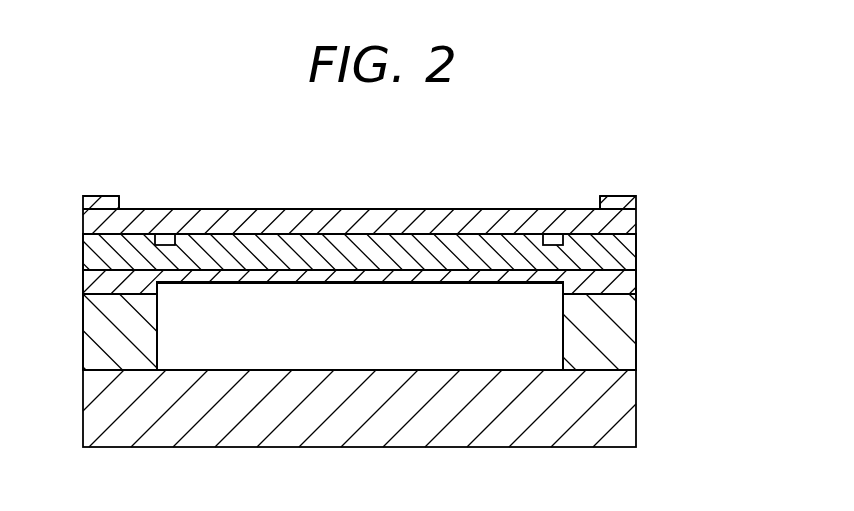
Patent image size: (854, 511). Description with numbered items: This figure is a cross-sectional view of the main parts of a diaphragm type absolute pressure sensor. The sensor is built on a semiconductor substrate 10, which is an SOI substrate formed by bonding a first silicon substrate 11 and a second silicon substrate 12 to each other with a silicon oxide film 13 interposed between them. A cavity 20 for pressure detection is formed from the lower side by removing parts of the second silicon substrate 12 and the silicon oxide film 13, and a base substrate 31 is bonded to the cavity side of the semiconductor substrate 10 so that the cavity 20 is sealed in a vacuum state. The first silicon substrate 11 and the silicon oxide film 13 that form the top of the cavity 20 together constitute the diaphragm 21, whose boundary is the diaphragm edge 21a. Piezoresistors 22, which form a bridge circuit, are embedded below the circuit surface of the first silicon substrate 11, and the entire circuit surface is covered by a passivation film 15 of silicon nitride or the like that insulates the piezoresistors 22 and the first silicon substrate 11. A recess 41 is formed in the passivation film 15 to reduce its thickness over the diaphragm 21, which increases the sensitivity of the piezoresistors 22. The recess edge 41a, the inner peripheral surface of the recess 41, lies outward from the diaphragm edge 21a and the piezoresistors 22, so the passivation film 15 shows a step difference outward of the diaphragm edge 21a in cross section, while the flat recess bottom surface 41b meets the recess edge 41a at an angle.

The semiconductor substrate 10 is at (709, 232).
The first silicon substrate 11 is at (625, 252).
The second silicon substrate 12 is at (625, 325).
The silicon oxide film 13 is at (620, 286).
The passivation film 15 is at (628, 213).
The cavity 20 is at (371, 335).
The diaphragm 21 is at (318, 240).
The diaphragm edge 21a is at (158, 284).
The piezoresistor 22 is at (166, 240).
The base substrate 31 is at (625, 402).
The recess 41 is at (264, 194).
The recess edge 41a is at (127, 207).
The recess bottom surface 41b is at (413, 209).